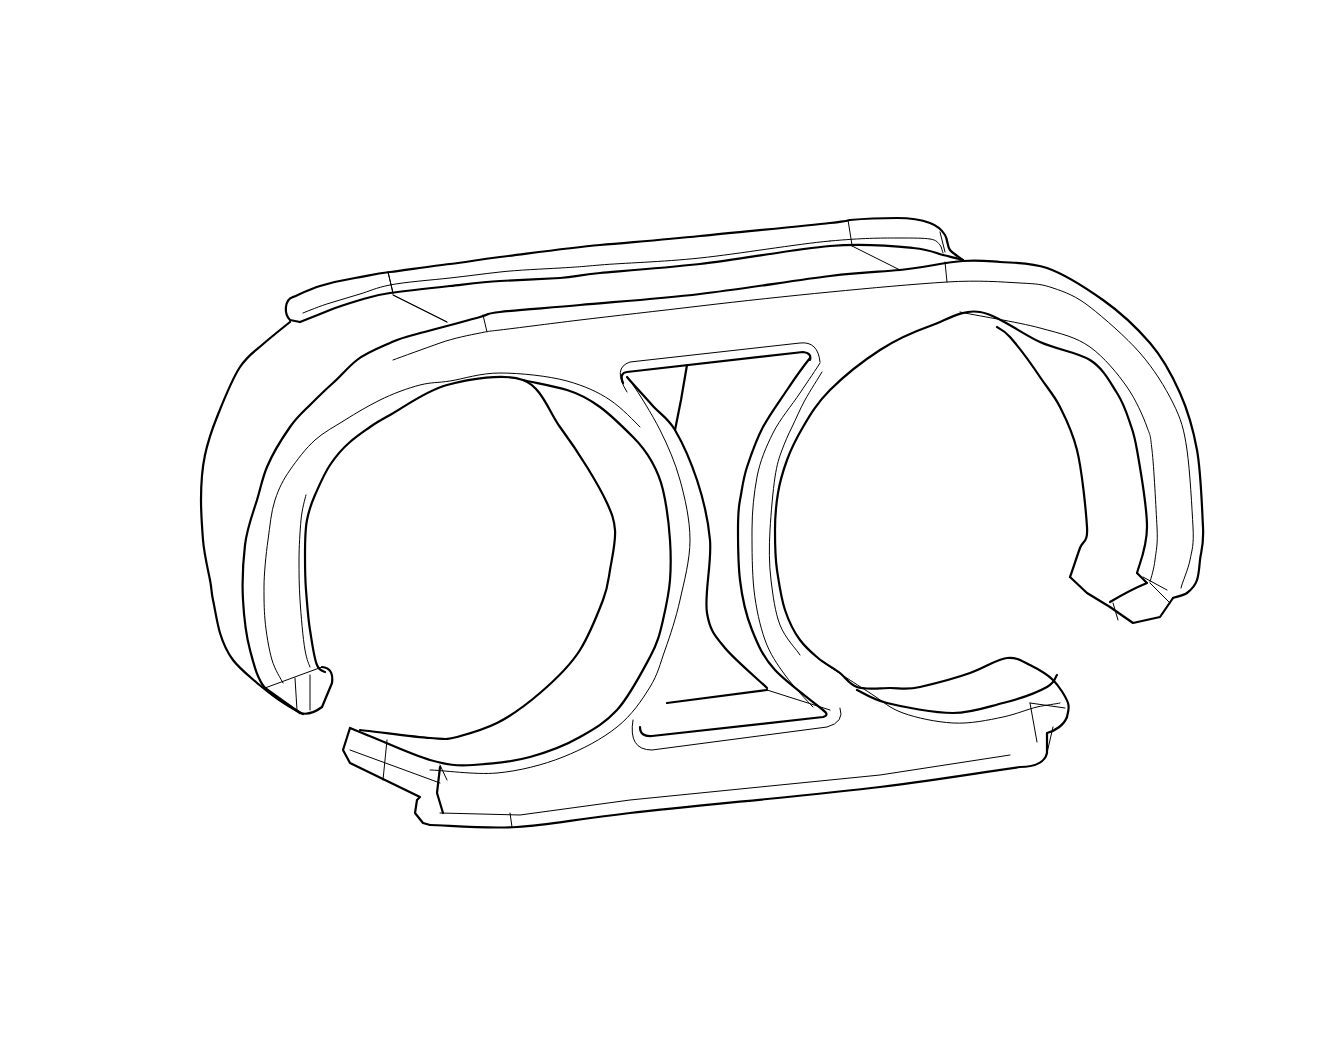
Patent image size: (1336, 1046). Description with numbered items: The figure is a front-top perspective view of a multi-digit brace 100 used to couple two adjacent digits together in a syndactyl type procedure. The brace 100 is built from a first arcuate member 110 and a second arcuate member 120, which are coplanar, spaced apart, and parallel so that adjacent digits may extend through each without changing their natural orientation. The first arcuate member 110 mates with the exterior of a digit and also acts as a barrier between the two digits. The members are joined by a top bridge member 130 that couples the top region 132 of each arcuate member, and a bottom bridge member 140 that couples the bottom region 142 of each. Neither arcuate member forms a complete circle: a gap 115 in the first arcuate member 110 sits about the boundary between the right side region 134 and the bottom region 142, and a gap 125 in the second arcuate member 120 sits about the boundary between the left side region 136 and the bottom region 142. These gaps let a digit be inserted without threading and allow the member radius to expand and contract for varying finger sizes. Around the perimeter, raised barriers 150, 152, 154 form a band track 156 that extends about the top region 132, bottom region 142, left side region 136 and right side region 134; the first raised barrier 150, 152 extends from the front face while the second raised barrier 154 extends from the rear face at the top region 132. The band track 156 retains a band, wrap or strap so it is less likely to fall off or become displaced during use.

The brace 100 is at (980, 113).
The first arcuate member 110 is at (310, 503).
The gap 115 is at (325, 733).
The second arcuate member 120 is at (1057, 405).
The gap 125 is at (1104, 646).
The top bridge member 130 is at (735, 342).
The top region 132 is at (437, 227).
The right side region 134 is at (188, 478).
The left side region 136 is at (1225, 396).
The bottom bridge member 140 is at (775, 772).
The bottom region 142 is at (580, 855).
The raised barrier 150 is at (1104, 298).
The raised barrier 152 is at (860, 790).
The second raised barrier 154 is at (598, 245).
The band track 156 is at (850, 200).